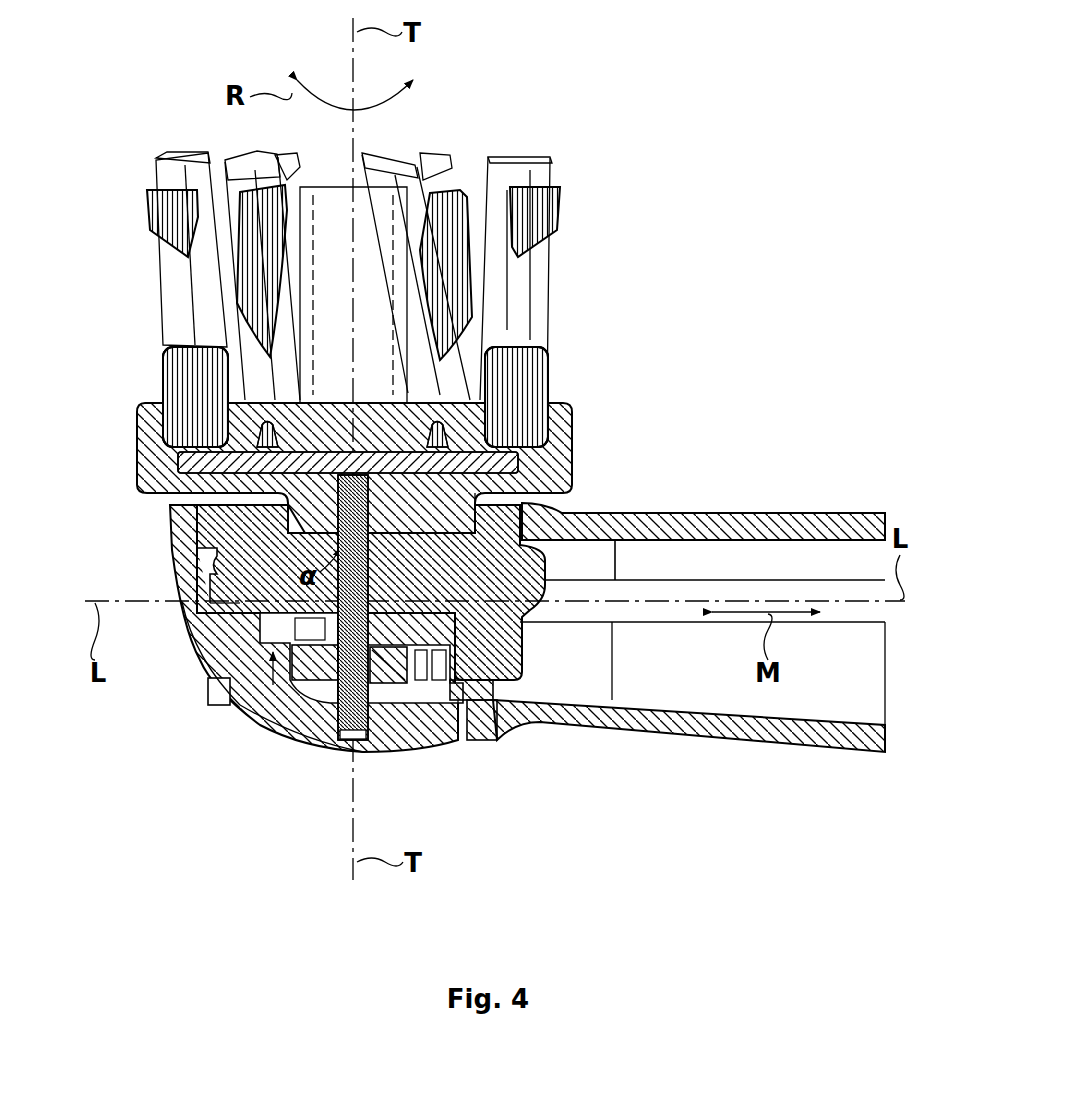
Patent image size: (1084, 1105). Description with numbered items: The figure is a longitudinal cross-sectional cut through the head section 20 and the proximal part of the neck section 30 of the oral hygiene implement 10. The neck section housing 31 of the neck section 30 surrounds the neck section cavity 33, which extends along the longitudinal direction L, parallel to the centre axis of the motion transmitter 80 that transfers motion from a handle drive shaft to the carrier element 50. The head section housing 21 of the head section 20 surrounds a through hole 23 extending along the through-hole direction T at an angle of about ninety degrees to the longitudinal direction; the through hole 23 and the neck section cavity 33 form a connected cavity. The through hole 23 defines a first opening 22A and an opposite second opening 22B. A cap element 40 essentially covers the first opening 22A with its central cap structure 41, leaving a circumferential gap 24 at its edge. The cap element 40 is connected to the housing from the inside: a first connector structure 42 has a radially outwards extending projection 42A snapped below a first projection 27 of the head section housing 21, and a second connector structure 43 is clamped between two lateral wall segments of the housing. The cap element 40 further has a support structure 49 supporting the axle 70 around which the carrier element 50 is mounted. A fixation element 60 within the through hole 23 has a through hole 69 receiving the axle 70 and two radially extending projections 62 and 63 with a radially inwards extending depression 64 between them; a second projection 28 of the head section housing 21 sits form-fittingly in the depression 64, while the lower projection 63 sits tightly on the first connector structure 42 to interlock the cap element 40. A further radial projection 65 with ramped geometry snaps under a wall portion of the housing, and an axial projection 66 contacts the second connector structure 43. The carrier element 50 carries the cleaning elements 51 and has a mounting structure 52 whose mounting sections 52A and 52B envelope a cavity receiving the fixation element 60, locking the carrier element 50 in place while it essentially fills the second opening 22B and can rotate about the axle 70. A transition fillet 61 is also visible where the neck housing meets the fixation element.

The oral hygiene implement 10 is at (757, 95).
The head section 20 is at (505, 95).
The head section housing 21 is at (225, 546).
The first opening 22A is at (322, 830).
The second opening 22B is at (318, 470).
The through hole 23 is at (275, 715).
The circumferential gap 24 is at (460, 748).
The first projection 27 is at (225, 620).
The second projection 28 is at (225, 572).
The neck section 30 is at (785, 458).
The neck section housing 31 is at (748, 530).
The neck section cavity 33 is at (820, 703).
The cap element 40 is at (428, 742).
The central cap structure 41 is at (290, 735).
The first connector structure 42 is at (235, 655).
The radially outwards extending projection 42A is at (228, 640).
The second connector structure 43 is at (487, 737).
The support structure 49 is at (370, 742).
The carrier element 50 is at (560, 440).
The cleaning elements 51 is at (388, 157).
The mounting structure 52 is at (215, 462).
The mounting section 52A is at (470, 500).
The mounting section 52B is at (300, 745).
The fixation element 60 is at (518, 623).
The transition fillet 61 is at (560, 535).
The first projection of the fixation element 62 is at (220, 490).
The second projection of the fixation element 63 is at (240, 600).
The depression 64 is at (225, 521).
The radial projection 65 is at (545, 555).
The axial projection 66 is at (518, 655).
The through hole 69 is at (370, 522).
The axle 70 is at (345, 742).
The motion transmitter 80 is at (862, 614).